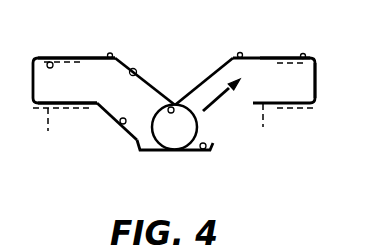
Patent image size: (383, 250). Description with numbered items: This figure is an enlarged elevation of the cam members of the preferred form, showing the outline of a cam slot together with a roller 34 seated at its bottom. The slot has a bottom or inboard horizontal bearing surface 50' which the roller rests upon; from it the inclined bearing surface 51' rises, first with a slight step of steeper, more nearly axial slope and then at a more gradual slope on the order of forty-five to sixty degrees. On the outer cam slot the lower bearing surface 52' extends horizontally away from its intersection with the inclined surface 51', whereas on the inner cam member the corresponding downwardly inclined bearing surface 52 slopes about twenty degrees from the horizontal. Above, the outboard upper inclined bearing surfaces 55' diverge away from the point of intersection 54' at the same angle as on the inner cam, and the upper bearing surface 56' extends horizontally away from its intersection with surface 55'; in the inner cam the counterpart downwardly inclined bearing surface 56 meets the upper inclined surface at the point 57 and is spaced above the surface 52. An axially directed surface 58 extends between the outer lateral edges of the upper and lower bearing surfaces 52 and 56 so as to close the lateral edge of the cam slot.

The roller 34 is at (200, 152).
The circumferentially extending bearing surface 50' is at (145, 166).
The inclined bearing surface 51' is at (106, 126).
The downwardly inclined bearing surface 52 is at (164, 105).
The lower bearing surface 52' is at (73, 87).
The point of intersection 54' is at (196, 85).
The outboard upper inclined bearing surface 55' is at (145, 69).
The downwardly inclined bearing surface 56 is at (149, 40).
The upper bearing surface 56' is at (285, 39).
The point 57 is at (111, 53).
The axially directed surface 58 is at (316, 84).